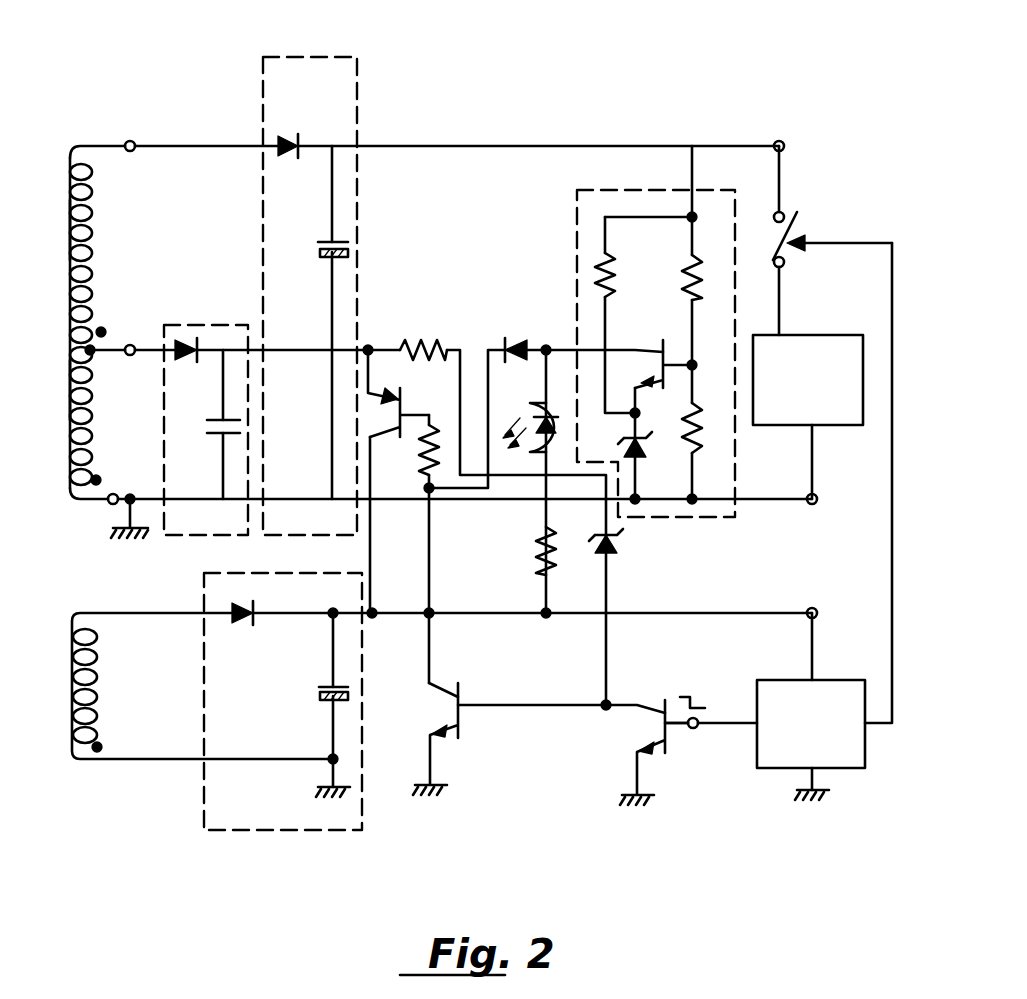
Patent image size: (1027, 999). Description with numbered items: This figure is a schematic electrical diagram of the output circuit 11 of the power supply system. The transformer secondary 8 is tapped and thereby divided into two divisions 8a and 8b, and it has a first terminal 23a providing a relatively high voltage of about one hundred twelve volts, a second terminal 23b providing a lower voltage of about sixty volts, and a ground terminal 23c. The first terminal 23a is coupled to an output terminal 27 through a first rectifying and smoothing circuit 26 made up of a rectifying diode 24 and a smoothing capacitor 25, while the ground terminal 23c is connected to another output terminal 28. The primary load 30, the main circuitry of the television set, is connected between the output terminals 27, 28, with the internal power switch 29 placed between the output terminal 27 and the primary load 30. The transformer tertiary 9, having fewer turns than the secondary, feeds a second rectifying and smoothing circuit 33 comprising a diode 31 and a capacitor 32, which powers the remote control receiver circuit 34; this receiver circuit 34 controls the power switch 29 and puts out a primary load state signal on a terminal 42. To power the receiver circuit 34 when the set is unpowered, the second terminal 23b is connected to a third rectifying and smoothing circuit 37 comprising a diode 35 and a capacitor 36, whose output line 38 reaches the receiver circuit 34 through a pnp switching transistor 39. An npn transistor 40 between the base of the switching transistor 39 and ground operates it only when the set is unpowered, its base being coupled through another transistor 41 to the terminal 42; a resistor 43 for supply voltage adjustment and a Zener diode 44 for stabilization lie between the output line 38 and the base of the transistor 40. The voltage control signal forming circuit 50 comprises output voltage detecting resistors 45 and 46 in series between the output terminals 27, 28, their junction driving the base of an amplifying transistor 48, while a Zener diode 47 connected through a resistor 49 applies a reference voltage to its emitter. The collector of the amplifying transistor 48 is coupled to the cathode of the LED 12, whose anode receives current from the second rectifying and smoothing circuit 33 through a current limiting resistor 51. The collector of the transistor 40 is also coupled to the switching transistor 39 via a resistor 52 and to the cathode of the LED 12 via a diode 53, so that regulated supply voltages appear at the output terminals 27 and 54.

The transformer secondary 8 is at (92, 200).
The first division of transformer secondary 8a is at (93, 252).
The second division of transformer secondary 8b is at (92, 398).
The transformer tertiary 9 is at (96, 690).
The output circuit 11 is at (620, 97).
The LED 12 is at (534, 420).
The first terminal 23a is at (135, 140).
The second terminal 23b is at (131, 344).
The ground terminal 23c is at (115, 493).
The rectifying diode 24 is at (300, 140).
The smoothing capacitor 25 is at (324, 240).
The first rectifying and smoothing circuit 26 is at (360, 97).
The output terminal 27 is at (782, 140).
The output terminal 28 is at (815, 505).
The power switch 29 is at (780, 240).
The primary load 30 is at (797, 427).
The diode 31 is at (244, 620).
The capacitor 32 is at (325, 684).
The second rectifying and smoothing circuit 33 is at (364, 708).
The remote control receiver circuit 34 is at (784, 686).
The diode 35 is at (185, 357).
The capacitor 36 is at (218, 438).
The third rectifying and smoothing circuit 37 is at (205, 324).
The output line 38 is at (370, 345).
The switching transistor 39 is at (410, 440).
The transistor 40 is at (466, 692).
The transistor 41 is at (645, 700).
The terminal 42 is at (696, 729).
The resistor 43 is at (418, 345).
The Zener diode 44 is at (614, 545).
The output voltage detecting resistor 45 is at (688, 282).
The output voltage detecting resistor 46 is at (700, 415).
The Zener diode 47 is at (648, 442).
The amplifying transistor 48 is at (655, 348).
The resistor 49 is at (608, 262).
The voltage control signal forming circuit 50 is at (575, 240).
The current limiting resistor 51 is at (540, 548).
The resistor 52 is at (430, 425).
The diode 53 is at (522, 340).
The output terminal 54 is at (818, 612).